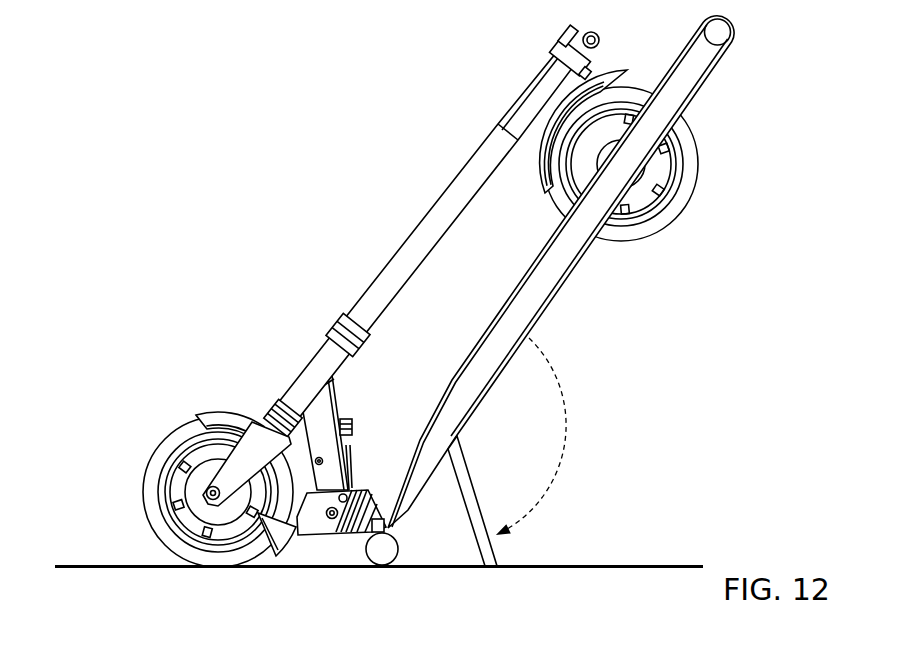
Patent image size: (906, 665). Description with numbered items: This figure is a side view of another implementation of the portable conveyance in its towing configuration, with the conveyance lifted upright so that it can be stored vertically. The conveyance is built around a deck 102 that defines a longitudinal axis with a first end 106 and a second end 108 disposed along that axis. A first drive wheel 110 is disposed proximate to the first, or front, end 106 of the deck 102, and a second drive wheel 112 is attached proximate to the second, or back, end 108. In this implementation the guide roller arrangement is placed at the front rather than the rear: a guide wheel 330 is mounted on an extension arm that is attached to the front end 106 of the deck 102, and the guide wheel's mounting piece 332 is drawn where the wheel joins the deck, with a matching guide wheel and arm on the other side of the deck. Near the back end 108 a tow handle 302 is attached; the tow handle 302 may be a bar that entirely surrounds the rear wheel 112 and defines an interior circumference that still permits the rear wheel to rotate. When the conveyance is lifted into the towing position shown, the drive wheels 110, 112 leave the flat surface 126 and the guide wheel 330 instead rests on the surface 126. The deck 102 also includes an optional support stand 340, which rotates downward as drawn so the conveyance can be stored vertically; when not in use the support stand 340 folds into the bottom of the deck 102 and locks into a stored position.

The deck 102 is at (562, 289).
The first end 106 is at (370, 482).
The second end 108 is at (548, 252).
The first drive wheel 110 is at (157, 462).
The second drive wheel 112 is at (692, 188).
The flat surface 126 is at (134, 568).
The tow handle 302 is at (697, 66).
The guide wheel 330 is at (391, 556).
The roller mount 332 is at (389, 526).
The support stand 340 is at (466, 476).